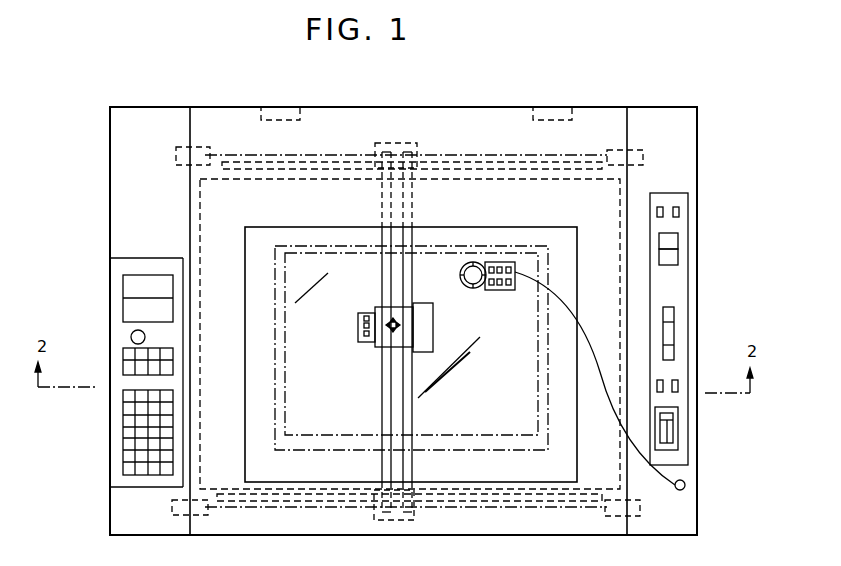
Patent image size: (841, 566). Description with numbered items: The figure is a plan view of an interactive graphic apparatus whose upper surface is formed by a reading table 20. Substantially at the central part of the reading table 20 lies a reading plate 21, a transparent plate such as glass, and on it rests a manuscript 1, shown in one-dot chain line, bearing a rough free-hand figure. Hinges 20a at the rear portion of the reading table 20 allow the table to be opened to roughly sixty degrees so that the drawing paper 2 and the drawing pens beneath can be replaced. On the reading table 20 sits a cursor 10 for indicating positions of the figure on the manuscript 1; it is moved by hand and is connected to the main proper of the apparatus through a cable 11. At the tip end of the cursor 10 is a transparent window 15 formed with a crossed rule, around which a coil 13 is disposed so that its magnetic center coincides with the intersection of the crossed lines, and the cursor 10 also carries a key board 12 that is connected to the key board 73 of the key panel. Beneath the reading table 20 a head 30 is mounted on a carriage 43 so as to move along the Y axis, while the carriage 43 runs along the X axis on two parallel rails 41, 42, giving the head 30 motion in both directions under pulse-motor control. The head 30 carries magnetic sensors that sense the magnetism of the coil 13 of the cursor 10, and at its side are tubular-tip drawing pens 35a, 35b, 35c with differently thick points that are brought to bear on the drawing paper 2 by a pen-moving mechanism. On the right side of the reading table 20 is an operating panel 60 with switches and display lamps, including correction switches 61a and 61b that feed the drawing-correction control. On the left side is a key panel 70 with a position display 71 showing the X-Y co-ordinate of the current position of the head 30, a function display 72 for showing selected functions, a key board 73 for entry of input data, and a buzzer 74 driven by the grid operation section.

The manuscript 1 is at (327, 268).
The drawing paper 2 is at (342, 444).
The cursor 10 is at (469, 292).
The cable 11 is at (589, 338).
The key board 12 is at (500, 290).
The coil 13 is at (472, 289).
The transparent window 15 is at (465, 286).
The reading table 20 is at (472, 120).
The hinges 20a is at (280, 107).
The reading plate 21 is at (456, 238).
The head 30 is at (380, 307).
The tubular-tip drawing pen 35a is at (360, 334).
The tubular-tip drawing pen 35b is at (360, 325).
The tubular-tip drawing pen 35c is at (362, 317).
The rail 41 is at (238, 164).
The rail 42 is at (232, 503).
The carriage 43 is at (398, 466).
The operating panel 60 is at (693, 329).
The correction switch 61a is at (670, 241).
The correction switch 61b is at (670, 257).
The key panel 70 is at (128, 364).
The position display 71 is at (123, 285).
The function display 72 is at (123, 310).
The key board 73 is at (123, 365).
The buzzer 74 is at (131, 337).